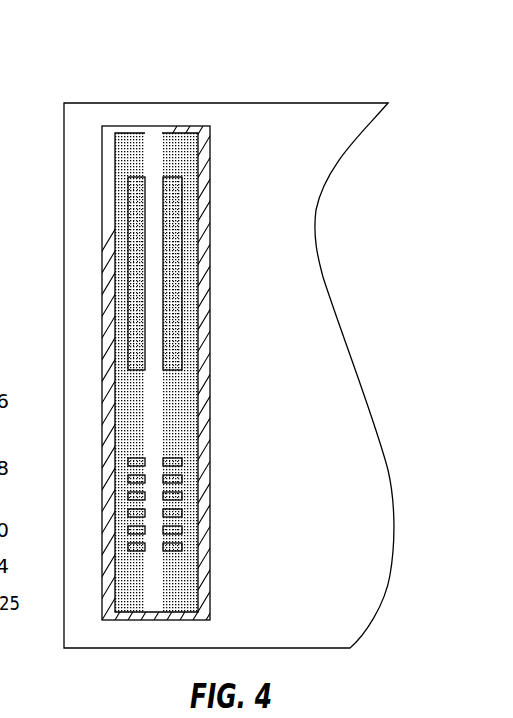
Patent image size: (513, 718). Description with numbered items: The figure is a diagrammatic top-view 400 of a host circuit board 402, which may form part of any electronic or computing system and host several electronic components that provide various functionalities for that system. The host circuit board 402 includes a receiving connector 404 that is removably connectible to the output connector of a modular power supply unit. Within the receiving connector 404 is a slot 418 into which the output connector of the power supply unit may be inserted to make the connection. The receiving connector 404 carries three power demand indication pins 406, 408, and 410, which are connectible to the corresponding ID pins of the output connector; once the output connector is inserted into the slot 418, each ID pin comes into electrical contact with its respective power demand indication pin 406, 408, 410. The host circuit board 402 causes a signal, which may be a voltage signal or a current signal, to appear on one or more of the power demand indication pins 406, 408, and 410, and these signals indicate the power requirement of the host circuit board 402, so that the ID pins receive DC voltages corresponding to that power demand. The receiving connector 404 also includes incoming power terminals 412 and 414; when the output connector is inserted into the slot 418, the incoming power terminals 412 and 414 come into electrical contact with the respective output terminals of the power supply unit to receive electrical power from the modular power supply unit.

The top-view 400 is at (251, 330).
The host circuit board 402 is at (288, 188).
The receiving connector 404 is at (209, 372).
The power demand indication pin 406 is at (200, 472).
The power demand indication pin 408 is at (180, 478).
The power demand indication pin 410 is at (181, 513).
The incoming power terminal 412 is at (175, 271).
The incoming power terminal 414 is at (133, 260).
The slot 418 is at (154, 156).